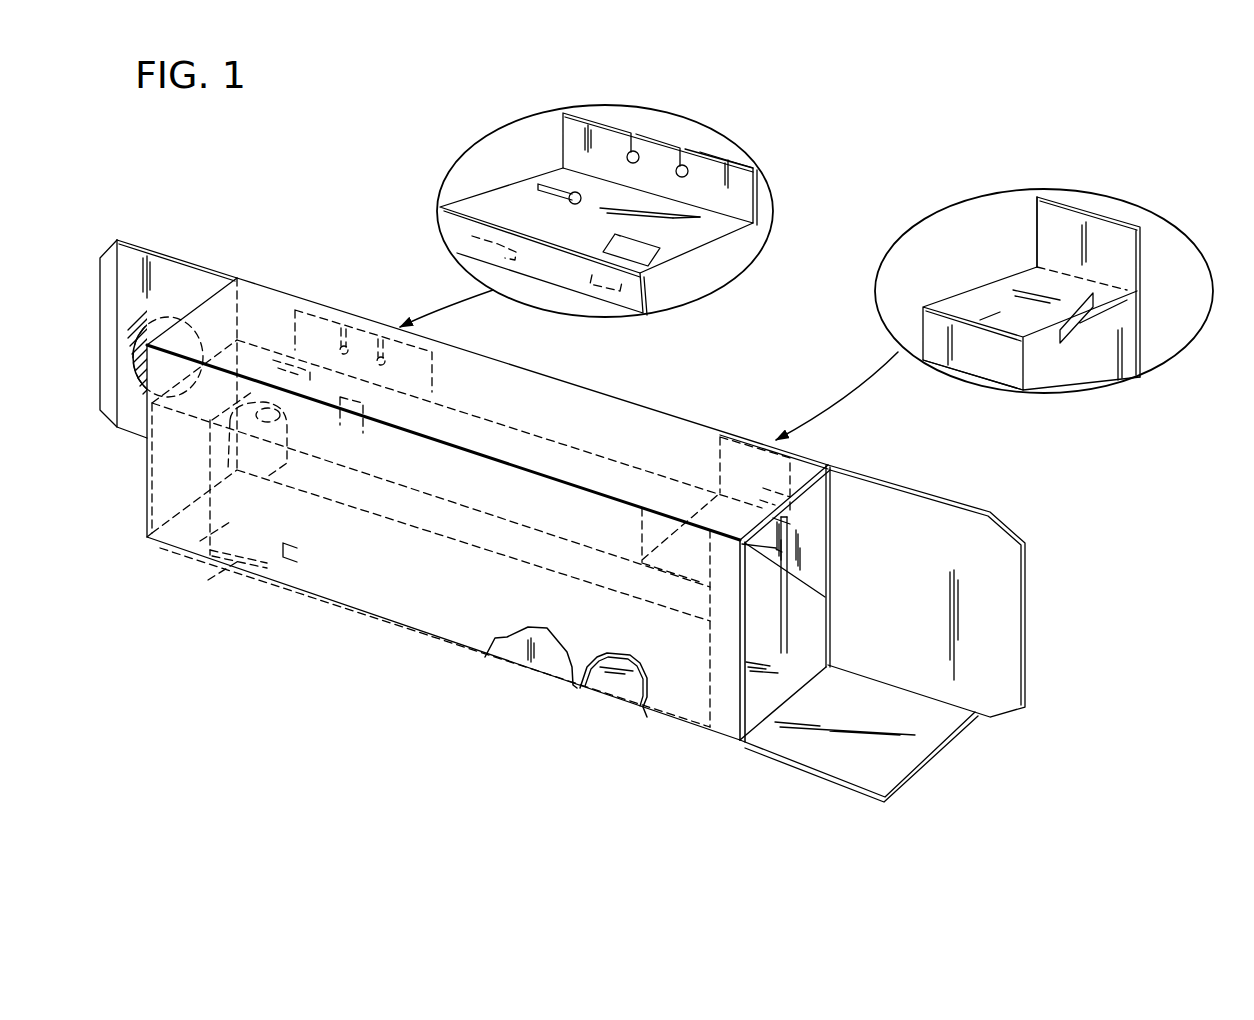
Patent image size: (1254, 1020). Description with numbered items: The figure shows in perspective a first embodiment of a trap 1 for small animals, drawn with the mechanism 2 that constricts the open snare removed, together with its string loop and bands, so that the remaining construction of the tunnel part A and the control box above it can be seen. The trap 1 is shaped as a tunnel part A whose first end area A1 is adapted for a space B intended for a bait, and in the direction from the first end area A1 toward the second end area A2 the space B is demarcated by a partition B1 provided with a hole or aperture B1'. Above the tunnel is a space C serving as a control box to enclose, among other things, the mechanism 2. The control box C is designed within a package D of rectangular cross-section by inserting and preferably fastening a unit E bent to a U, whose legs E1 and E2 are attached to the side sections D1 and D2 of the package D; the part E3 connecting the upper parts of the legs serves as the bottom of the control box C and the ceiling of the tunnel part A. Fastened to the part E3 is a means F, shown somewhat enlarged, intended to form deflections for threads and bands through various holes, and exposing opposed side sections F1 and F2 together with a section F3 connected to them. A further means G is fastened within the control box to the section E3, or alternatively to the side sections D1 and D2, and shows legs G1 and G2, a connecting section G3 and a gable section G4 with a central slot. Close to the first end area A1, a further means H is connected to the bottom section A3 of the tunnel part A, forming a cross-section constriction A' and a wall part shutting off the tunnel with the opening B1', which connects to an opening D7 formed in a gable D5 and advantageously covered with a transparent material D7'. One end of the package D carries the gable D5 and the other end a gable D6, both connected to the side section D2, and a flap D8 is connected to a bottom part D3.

The trap 1 is at (693, 408).
The mechanism 2 is at (508, 413).
The tunnel part A is at (589, 716).
The first end area A1 is at (133, 495).
The second end area A2 is at (707, 747).
The bottom section A3 is at (630, 692).
The cross section constriction A' is at (288, 598).
The space B is at (133, 465).
The partition B1 is at (165, 555).
The hole or aperture B1' is at (185, 589).
The space serving as control box C is at (572, 450).
The package D is at (370, 632).
The side section D1 is at (448, 607).
The side section D2 is at (817, 497).
The bottom part D3 is at (777, 704).
The gable D5 is at (177, 257).
The gable D6 is at (970, 533).
The opening D7 is at (129, 336).
The transparent material D7' is at (128, 352).
The flap D8 is at (890, 767).
The unit E is at (547, 645).
The side section E1 is at (518, 650).
The side section E2 is at (777, 547).
The connecting part E3 is at (777, 547).
The means F is at (322, 333).
The side section F1 is at (740, 190).
The side section F2 is at (620, 303).
The section F3 is at (713, 240).
The further means G is at (767, 470).
The leg G1 is at (1042, 213).
The leg G2 is at (983, 370).
The connecting section G3 is at (1000, 312).
The gable section G4 is at (1047, 358).
The further means H is at (257, 565).